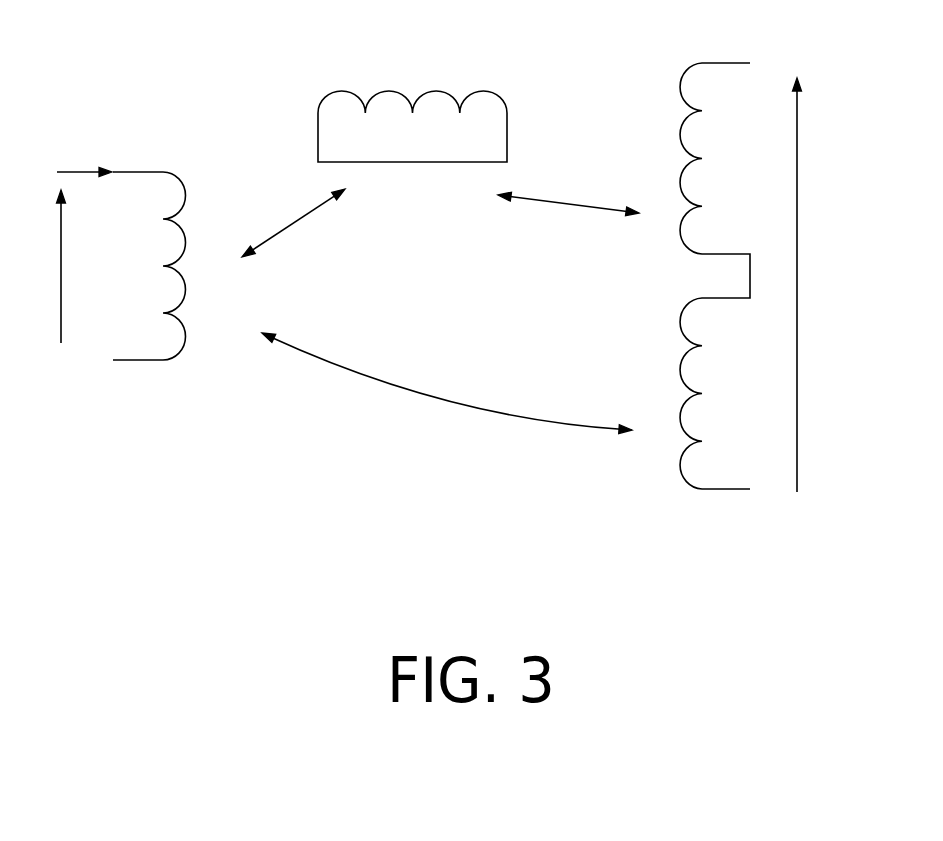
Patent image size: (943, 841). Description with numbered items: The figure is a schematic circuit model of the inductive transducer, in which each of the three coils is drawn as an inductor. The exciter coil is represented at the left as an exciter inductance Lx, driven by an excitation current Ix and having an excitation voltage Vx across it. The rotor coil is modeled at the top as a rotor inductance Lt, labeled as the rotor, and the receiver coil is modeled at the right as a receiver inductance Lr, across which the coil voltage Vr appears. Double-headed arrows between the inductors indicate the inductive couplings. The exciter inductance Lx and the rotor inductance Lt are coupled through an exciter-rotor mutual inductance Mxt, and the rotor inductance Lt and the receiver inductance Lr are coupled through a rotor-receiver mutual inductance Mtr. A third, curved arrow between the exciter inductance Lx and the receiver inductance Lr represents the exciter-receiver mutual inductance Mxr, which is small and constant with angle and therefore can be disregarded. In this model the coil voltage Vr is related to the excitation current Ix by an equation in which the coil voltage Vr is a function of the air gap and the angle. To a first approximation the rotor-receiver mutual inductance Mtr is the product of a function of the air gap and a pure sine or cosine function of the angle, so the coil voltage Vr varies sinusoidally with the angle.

The exciter inductance Lx is at (149, 249).
The excitation current Ix is at (64, 164).
The excitation voltage Vx is at (37, 266).
The rotor inductance Lt is at (412, 100).
The receiver inductance Lr is at (715, 276).
The coil voltage Vr is at (828, 285).
The exciter-rotor mutual inductance Mxt is at (302, 228).
The rotor-receiver mutual inductance Mtr is at (568, 227).
The exciter-receiver mutual inductance Mxr is at (447, 383).